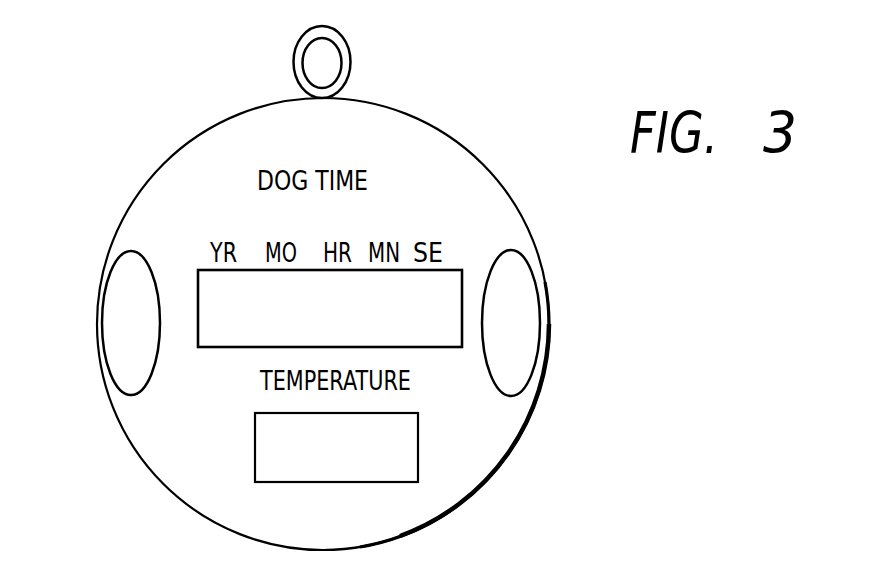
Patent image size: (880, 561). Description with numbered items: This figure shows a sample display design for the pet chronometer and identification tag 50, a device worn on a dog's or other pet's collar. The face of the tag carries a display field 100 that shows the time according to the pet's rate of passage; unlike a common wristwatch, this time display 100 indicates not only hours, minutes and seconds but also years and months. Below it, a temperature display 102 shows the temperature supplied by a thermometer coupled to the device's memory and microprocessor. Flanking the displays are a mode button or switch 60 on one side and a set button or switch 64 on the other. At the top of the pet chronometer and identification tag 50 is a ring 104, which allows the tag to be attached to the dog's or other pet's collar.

The pet chronometer and identification tag 50 is at (178, 108).
The ring 104 is at (349, 66).
The display field 100 is at (447, 270).
The set button or switch 64 is at (510, 252).
The mode button or switch 60 is at (132, 395).
The temperature display 102 is at (418, 448).